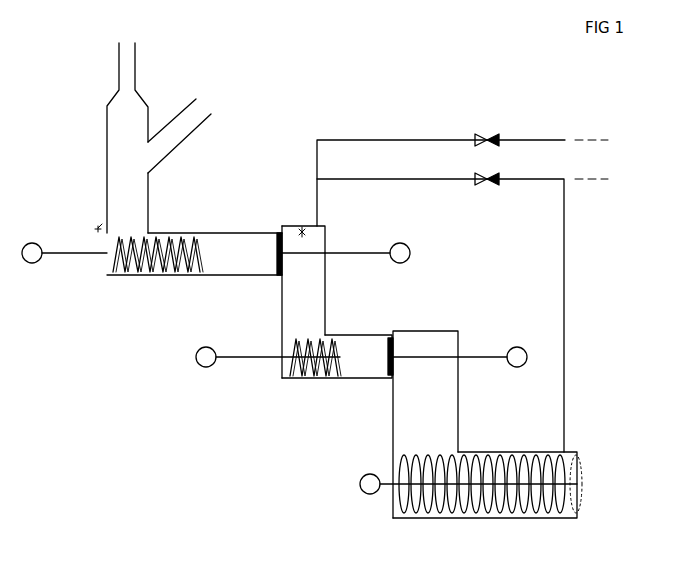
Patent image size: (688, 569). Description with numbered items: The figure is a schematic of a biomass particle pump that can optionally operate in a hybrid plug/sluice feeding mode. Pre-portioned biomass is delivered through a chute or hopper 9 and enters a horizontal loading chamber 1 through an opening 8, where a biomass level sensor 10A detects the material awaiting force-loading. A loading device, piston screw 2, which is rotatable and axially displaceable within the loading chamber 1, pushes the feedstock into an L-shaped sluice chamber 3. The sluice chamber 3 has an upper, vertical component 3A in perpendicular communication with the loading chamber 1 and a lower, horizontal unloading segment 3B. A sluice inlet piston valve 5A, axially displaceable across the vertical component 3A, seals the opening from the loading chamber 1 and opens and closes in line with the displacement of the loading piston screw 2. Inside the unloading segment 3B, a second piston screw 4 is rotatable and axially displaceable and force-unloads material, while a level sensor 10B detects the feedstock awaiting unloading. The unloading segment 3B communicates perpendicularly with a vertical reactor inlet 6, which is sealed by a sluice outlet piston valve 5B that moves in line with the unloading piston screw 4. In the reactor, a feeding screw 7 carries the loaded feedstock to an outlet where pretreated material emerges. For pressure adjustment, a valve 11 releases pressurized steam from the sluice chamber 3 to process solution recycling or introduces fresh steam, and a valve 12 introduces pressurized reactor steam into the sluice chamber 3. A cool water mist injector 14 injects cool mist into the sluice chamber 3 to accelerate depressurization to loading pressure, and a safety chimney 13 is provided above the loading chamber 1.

The loading chamber 1 is at (228, 247).
The piston screw 2 is at (75, 255).
The sluice chamber 3 is at (320, 322).
The upper, vertical component 3A is at (290, 240).
The unloading segment 3B is at (358, 366).
The piston screw 4 is at (246, 360).
The sluice inlet piston valve 5A is at (368, 252).
The sluice outlet piston valve 5B is at (497, 355).
The vertical reactor inlet 6 is at (440, 340).
The feeding screw 7 is at (500, 452).
The opening 8 is at (125, 232).
The chute or hopper 9 is at (192, 118).
The biomass level sensor 10A is at (97, 227).
The level sensor 10B is at (272, 333).
The valve 11 is at (498, 136).
The valve 12 is at (497, 185).
The safety chimney 13 is at (127, 65).
The cool water mist injector 14 is at (302, 227).